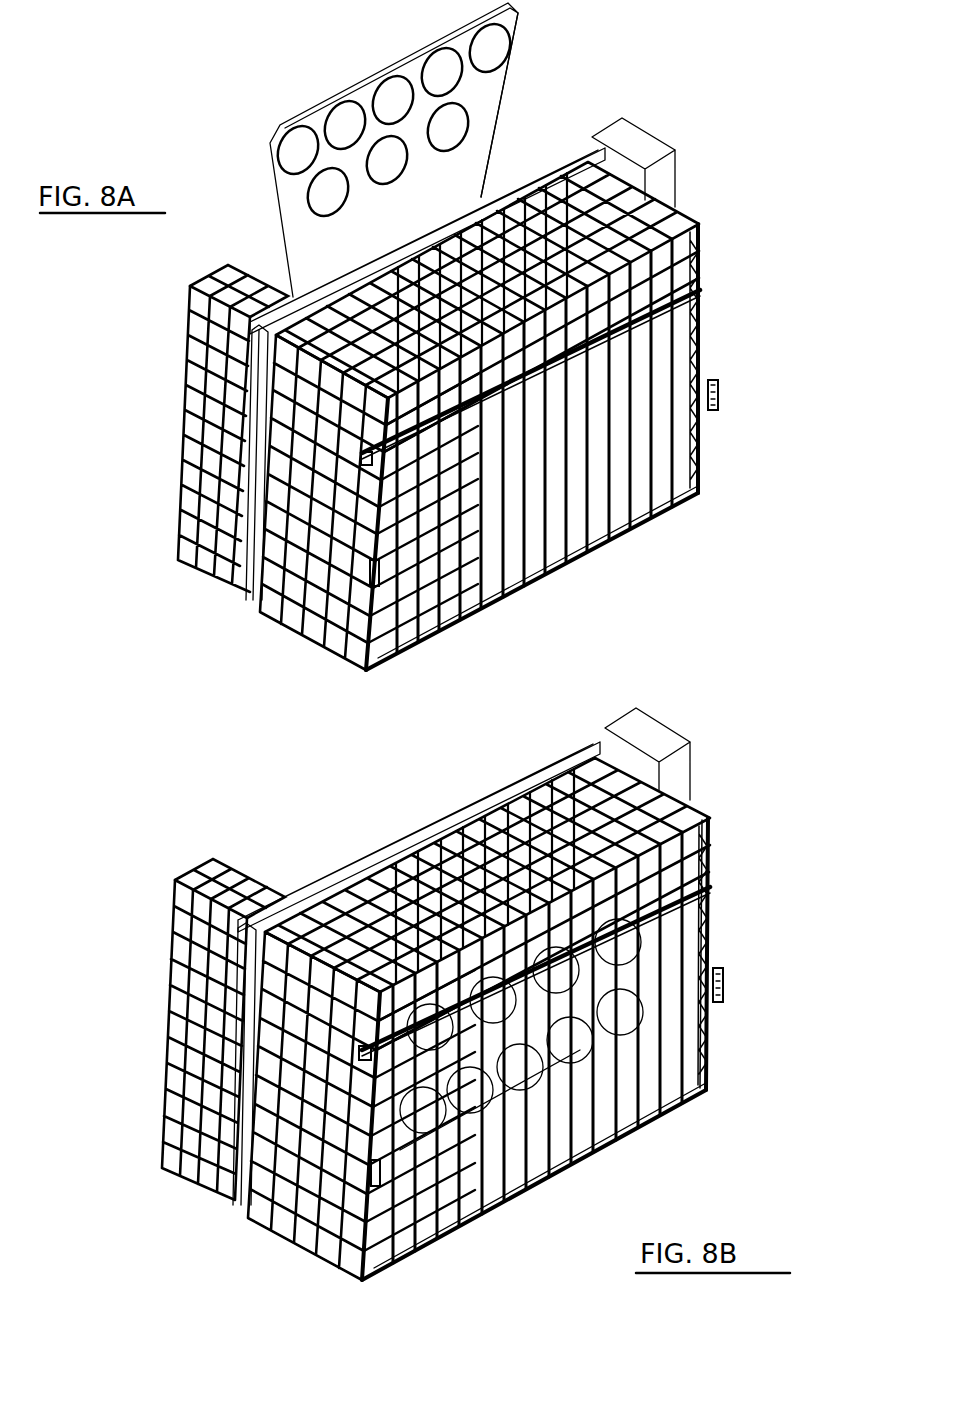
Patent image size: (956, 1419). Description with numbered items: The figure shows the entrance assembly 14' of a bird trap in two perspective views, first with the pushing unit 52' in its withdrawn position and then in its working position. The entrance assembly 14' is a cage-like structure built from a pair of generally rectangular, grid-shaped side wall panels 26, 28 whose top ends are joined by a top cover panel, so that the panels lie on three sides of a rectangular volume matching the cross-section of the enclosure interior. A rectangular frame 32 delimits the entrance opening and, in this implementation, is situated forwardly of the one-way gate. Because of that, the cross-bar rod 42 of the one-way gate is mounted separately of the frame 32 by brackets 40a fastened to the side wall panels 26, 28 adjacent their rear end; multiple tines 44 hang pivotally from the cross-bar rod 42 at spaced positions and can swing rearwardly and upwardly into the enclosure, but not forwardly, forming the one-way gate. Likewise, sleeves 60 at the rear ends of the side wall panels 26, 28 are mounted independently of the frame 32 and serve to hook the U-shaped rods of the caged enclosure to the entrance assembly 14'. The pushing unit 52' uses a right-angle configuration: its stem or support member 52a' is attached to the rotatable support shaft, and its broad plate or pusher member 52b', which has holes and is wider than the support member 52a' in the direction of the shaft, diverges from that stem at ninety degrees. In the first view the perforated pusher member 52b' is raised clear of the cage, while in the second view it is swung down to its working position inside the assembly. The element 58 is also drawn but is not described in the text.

In FIG. 8A, the entrance assembly 14' is at (531, 416).
In FIG. 8B, the entrance assembly 14' is at (547, 996).
In FIG. 8A, the side wall panel 26 is at (643, 418).
In FIG. 8B, the side wall panel 26 is at (673, 1080).
In FIG. 8A, the side wall panel 28 is at (236, 548).
In FIG. 8B, the side wall panel 28 is at (285, 1196).
In FIG. 8A, the frame 32 is at (577, 143).
In FIG. 8B, the frame 32 is at (572, 735).
In FIG. 8B, the brackets 40a is at (355, 1052).
In FIG. 8A, the cross-bar rod 42 is at (700, 432).
In FIG. 8A, the tines 44 is at (509, 525).
In FIG. 8B, the tines 44 is at (510, 1150).
In FIG. 8A, the pushing unit 52' is at (428, 150).
In FIG. 8B, the stem or support member 52a' is at (510, 939).
In FIG. 8A, the broad plate or pusher member 52b' is at (542, 100).
In FIG. 8B, the broad plate or pusher member 52b' is at (768, 954).
In FIG. 8A, the block 58 is at (637, 148).
In FIG. 8A, the sleeves 60 is at (717, 395).
In FIG. 8B, the sleeves 60 is at (728, 990).